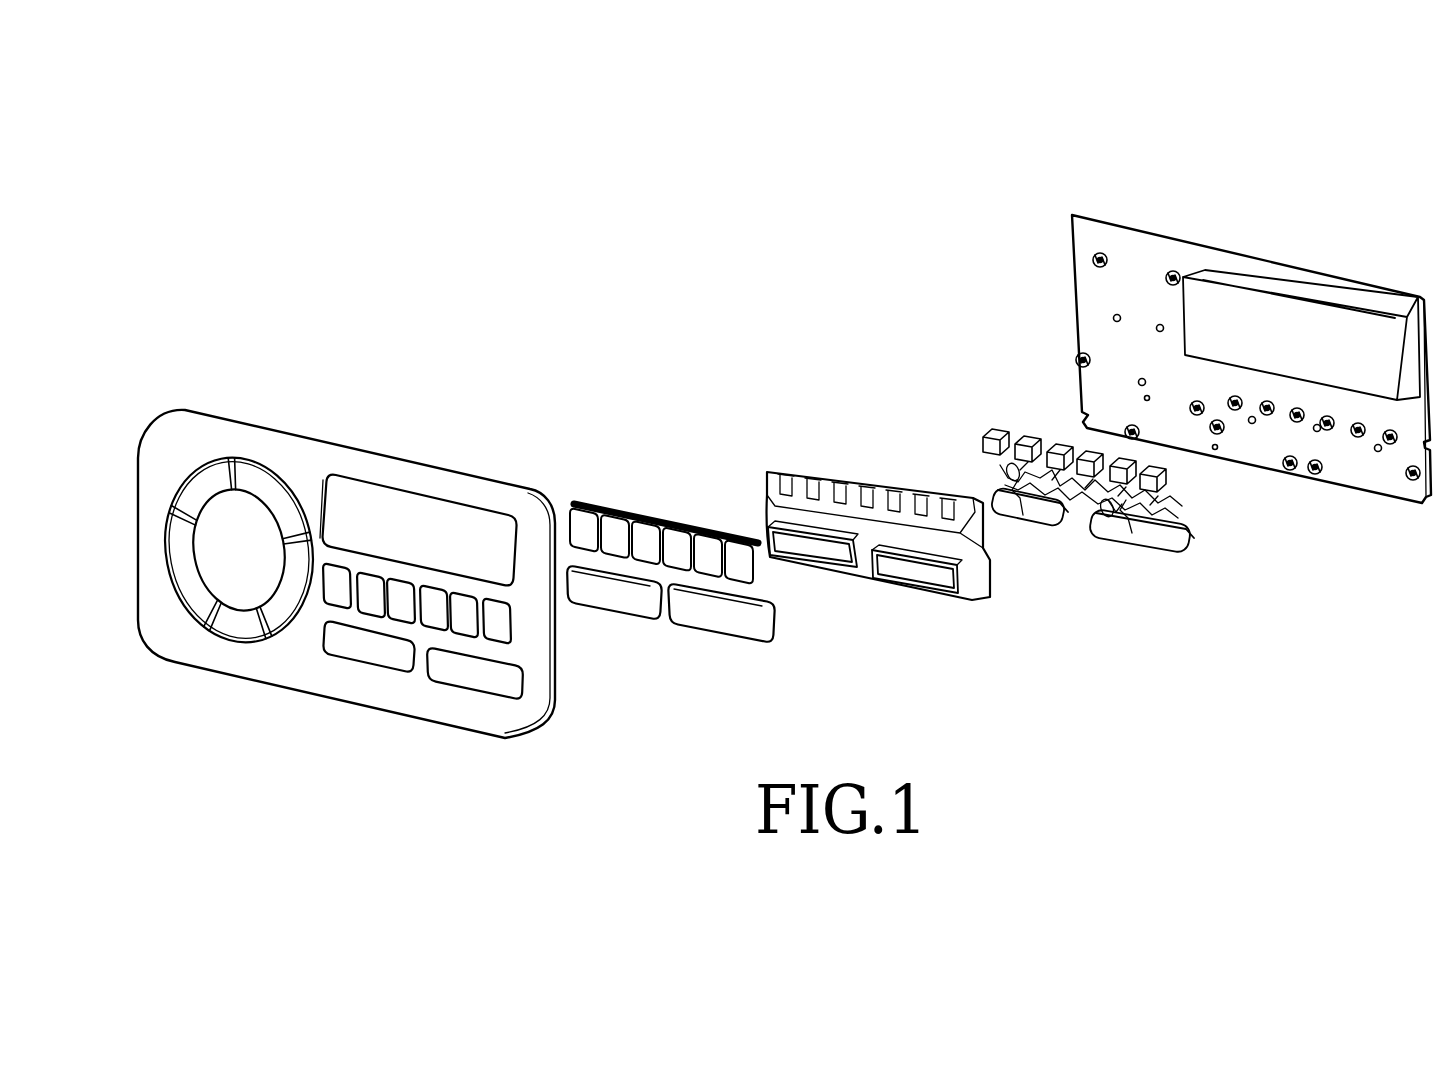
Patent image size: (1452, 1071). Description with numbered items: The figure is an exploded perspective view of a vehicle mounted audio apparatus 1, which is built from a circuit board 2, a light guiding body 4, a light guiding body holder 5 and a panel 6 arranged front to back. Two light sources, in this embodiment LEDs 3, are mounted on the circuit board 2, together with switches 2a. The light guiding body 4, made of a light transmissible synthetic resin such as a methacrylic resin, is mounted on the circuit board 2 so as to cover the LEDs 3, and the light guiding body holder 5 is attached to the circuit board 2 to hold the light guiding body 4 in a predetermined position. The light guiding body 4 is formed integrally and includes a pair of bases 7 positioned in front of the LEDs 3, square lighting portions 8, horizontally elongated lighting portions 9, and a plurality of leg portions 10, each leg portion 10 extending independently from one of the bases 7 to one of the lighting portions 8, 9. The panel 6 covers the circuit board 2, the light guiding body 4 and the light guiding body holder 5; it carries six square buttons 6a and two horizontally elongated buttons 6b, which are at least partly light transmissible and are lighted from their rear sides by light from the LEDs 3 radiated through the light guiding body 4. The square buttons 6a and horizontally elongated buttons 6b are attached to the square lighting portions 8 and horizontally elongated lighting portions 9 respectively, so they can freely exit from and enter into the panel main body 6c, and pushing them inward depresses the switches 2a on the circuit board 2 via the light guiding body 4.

The vehicle mounted audio apparatus 1 is at (586, 178).
The circuit board 2 is at (1097, 221).
The switches 2a is at (1233, 398).
The LEDs 3 is at (1252, 425).
The light guiding body 4 is at (966, 395).
The light guiding body holder 5 is at (792, 417).
The panel 6 is at (472, 322).
The square buttons 6a is at (671, 505).
The horizontally elongated buttons 6b is at (565, 553).
The panel main body 6c is at (473, 485).
The bases 7 is at (1023, 515).
The square lighting portions 8 is at (1031, 426).
The horizontally elongated lighting portions 9 is at (1065, 540).
The leg portions 10 is at (1018, 468).